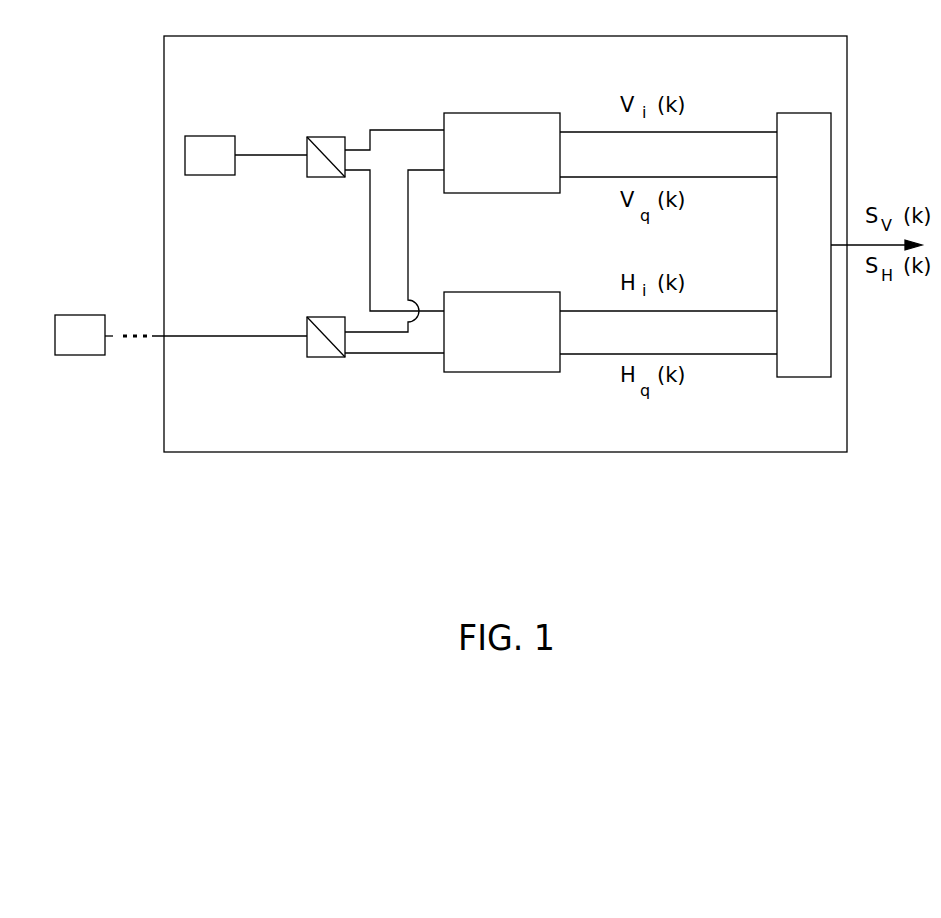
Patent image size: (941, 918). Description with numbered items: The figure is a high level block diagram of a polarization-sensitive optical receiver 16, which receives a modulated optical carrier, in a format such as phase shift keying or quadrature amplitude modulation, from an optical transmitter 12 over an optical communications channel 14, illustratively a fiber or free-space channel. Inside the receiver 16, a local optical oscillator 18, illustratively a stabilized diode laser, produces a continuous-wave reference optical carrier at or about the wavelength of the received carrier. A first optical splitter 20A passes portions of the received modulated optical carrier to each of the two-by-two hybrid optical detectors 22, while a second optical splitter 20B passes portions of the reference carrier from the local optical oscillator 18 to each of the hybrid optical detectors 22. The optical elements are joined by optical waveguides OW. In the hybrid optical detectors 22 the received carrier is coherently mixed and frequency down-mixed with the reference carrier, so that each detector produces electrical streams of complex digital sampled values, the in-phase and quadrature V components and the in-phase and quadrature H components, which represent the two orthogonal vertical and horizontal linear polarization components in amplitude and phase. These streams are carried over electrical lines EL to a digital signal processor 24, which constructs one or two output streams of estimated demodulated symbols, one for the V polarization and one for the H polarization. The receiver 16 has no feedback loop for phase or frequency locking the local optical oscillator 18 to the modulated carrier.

The optical transmitter 12 is at (91, 347).
The optical communications channel 14 is at (130, 318).
The polarization-sensitive optical receiver 16 is at (558, 36).
The local optical oscillator 18 is at (215, 176).
The first optical splitter 20A is at (333, 357).
The second optical splitter 20B is at (333, 177).
The hybrid optical detector 22 is at (510, 163).
The digital signal processor 24 is at (817, 255).
The optical waveguide OW is at (270, 153).
The electrical line EL is at (754, 132).